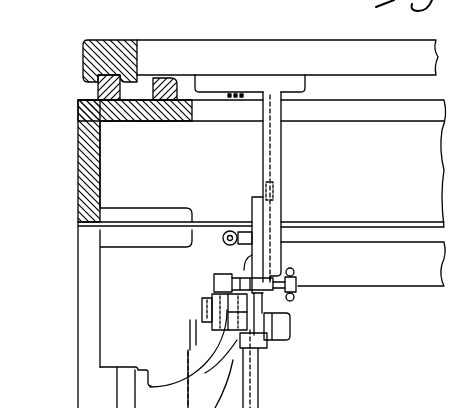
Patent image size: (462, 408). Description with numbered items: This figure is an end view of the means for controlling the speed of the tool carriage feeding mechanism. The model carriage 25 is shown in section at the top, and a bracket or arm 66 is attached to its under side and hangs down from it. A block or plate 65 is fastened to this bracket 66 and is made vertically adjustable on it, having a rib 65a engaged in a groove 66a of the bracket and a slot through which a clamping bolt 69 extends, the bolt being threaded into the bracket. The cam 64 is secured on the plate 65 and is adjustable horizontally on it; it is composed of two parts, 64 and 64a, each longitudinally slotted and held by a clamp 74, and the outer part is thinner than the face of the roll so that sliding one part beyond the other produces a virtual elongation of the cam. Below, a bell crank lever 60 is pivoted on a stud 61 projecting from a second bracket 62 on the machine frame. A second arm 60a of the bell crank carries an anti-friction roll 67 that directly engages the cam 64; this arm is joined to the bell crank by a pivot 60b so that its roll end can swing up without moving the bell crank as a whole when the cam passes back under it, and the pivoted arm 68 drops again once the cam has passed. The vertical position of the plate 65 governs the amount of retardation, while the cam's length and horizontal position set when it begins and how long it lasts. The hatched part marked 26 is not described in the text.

The model carriage 25 is at (142, 40).
The packing block 26 is at (98, 90).
The bell crank lever 60 is at (258, 393).
The second arm of the bell crank 60a is at (213, 305).
The pivot 60b is at (203, 318).
The stud 61 is at (264, 351).
The second bracket 62 is at (135, 387).
The cam 64 is at (212, 278).
The part of the cam 64a is at (250, 260).
The block or plate 65 is at (262, 204).
The rib 65a is at (283, 205).
The bracket or arm 66 is at (272, 160).
The groove 66a is at (270, 193).
The anti-friction roll 67 is at (190, 334).
The pivoted arm 68 is at (193, 359).
The clamping bolt 69 is at (238, 247).
The clamp 74 is at (295, 274).